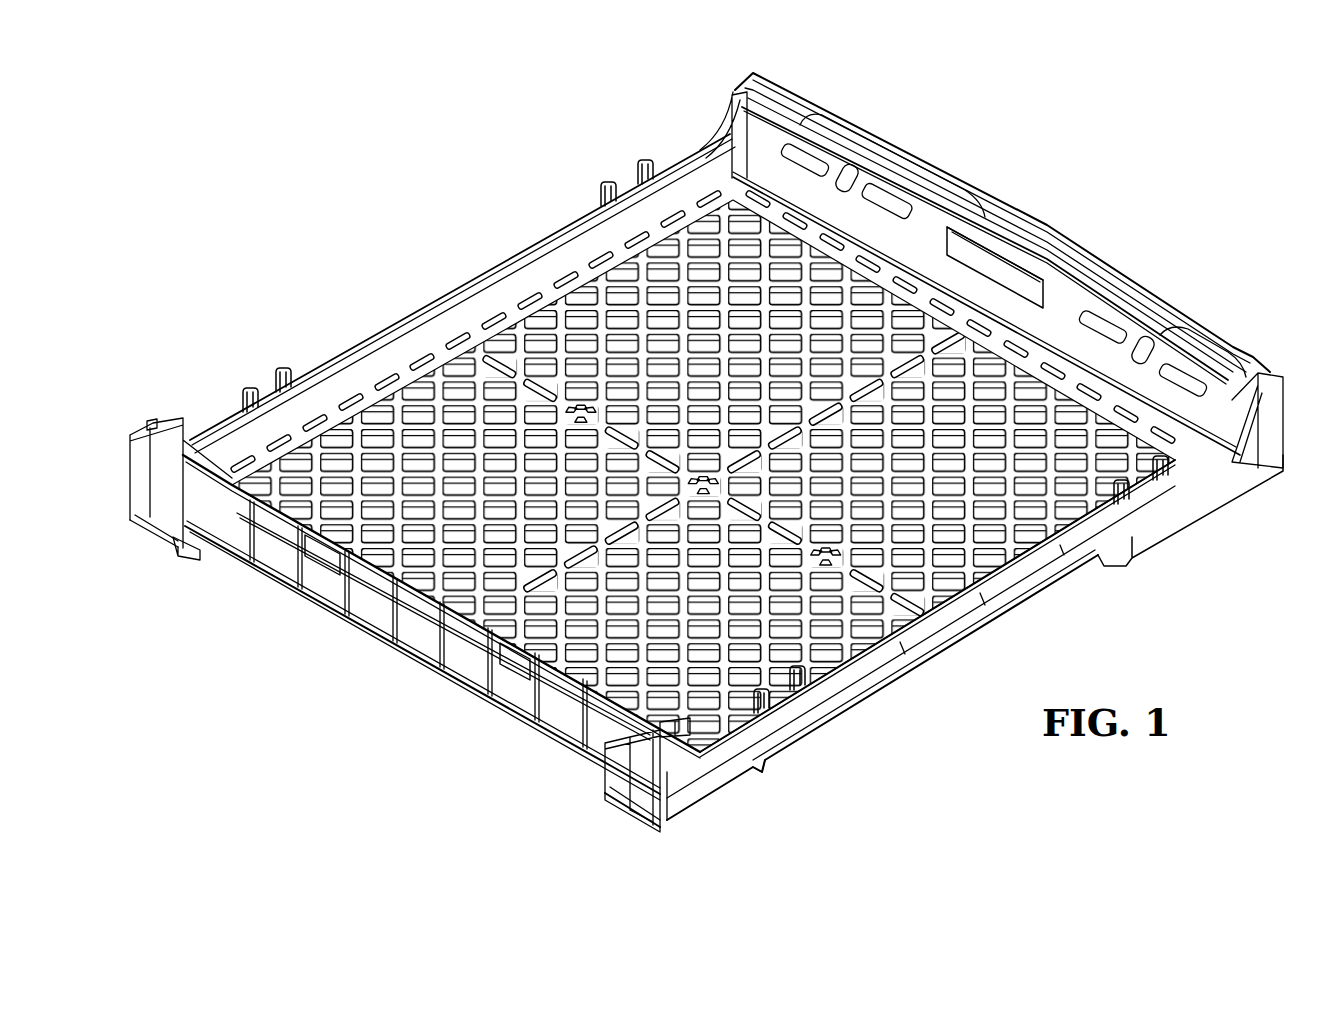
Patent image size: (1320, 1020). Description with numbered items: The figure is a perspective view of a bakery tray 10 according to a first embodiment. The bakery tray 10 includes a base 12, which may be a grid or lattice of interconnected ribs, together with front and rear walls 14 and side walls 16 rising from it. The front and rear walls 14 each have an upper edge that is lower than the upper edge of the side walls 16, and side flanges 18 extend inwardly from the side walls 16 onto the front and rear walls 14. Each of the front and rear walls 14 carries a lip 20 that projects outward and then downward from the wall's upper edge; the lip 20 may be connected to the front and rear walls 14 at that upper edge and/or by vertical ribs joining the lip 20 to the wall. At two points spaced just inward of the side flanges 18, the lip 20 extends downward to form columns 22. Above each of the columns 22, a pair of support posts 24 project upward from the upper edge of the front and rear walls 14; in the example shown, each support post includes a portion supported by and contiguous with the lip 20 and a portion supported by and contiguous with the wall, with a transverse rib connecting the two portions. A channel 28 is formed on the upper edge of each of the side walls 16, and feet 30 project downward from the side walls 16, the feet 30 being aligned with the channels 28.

The bakery tray 10 is at (1090, 110).
The base 12 is at (565, 280).
The front and rear walls 14 is at (445, 300).
The side walls 16 is at (1020, 210).
The side flanges 18 is at (706, 132).
The lip 20 is at (860, 703).
The columns 22 is at (1140, 562).
The support posts 24 is at (615, 178).
The channel 28 is at (330, 555).
The feet 30 is at (190, 552).